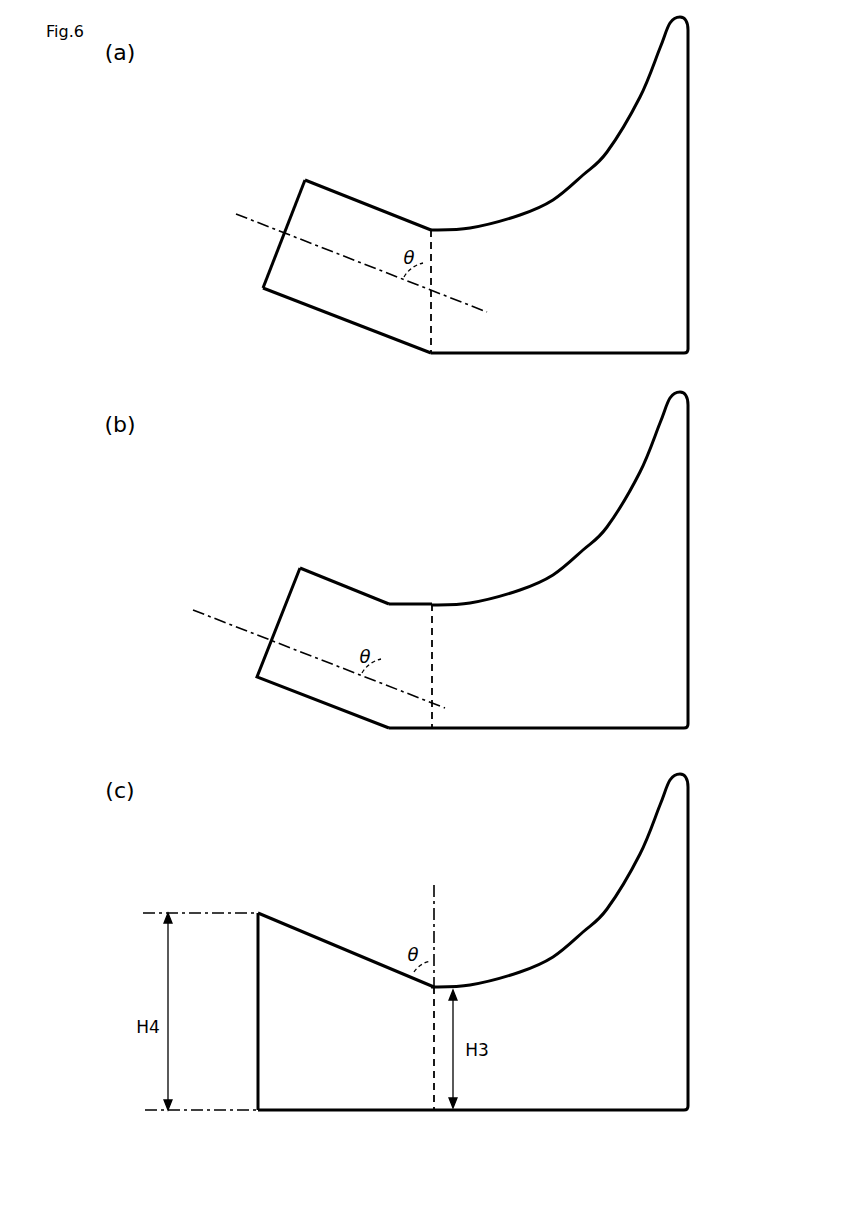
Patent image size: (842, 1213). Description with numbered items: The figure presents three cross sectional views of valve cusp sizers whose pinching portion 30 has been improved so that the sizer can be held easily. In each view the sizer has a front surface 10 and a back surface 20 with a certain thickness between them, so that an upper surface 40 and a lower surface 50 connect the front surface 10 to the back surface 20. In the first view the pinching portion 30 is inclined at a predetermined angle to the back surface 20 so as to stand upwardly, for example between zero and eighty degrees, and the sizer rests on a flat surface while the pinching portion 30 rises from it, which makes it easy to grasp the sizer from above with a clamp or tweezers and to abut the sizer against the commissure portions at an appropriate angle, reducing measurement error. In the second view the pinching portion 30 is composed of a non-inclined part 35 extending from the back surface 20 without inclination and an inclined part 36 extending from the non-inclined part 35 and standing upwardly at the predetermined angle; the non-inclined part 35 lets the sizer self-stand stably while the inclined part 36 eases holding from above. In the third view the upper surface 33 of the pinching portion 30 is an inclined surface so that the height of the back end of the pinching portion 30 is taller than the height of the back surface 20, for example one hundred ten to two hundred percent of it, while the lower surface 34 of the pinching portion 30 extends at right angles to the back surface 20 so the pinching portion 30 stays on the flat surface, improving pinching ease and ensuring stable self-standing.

The front surface 10 is at (690, 205).
The back surface 20 is at (435, 245).
The pinching portion 30 is at (288, 207).
The upper surface of the pinching portion 33 is at (357, 200).
The lower surface of the pinching portion 34 is at (320, 310).
The non-inclined part 35 is at (392, 597).
The inclined part 36 is at (302, 563).
The upper surface 40 is at (583, 175).
The lower surface 50 is at (535, 355).